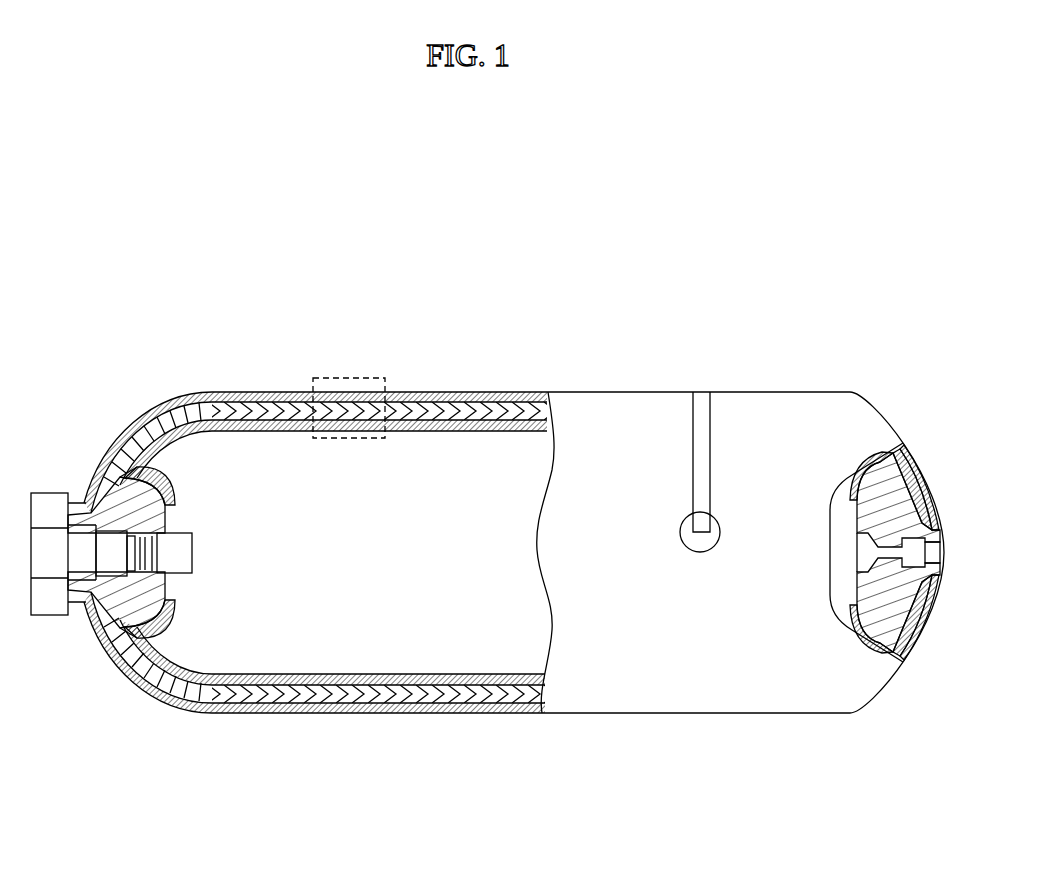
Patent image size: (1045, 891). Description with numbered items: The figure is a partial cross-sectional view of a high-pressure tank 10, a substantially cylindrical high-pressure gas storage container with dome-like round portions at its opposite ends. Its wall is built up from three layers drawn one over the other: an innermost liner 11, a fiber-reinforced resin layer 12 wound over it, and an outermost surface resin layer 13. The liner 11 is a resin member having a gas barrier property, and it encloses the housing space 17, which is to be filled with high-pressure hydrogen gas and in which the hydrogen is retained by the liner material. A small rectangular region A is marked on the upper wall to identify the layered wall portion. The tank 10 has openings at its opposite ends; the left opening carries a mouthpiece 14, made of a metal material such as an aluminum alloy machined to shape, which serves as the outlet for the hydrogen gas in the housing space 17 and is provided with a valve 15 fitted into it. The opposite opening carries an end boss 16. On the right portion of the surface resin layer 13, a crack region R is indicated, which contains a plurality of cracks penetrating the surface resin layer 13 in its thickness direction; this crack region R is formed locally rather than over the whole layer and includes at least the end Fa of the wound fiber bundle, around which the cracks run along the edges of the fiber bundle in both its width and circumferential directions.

The high-pressure tank 10 is at (655, 340).
The liner 11 is at (295, 682).
The fiber-reinforced resin layer 12 is at (345, 692).
The surface resin layer 13 is at (393, 710).
The mouthpiece 14 is at (115, 512).
The valve 15 is at (48, 600).
The end boss 16 is at (900, 587).
The housing space 17 is at (402, 475).
The region A is at (351, 378).
The crack region R is at (698, 530).
The end of the wound fiber bundle Fa is at (708, 537).